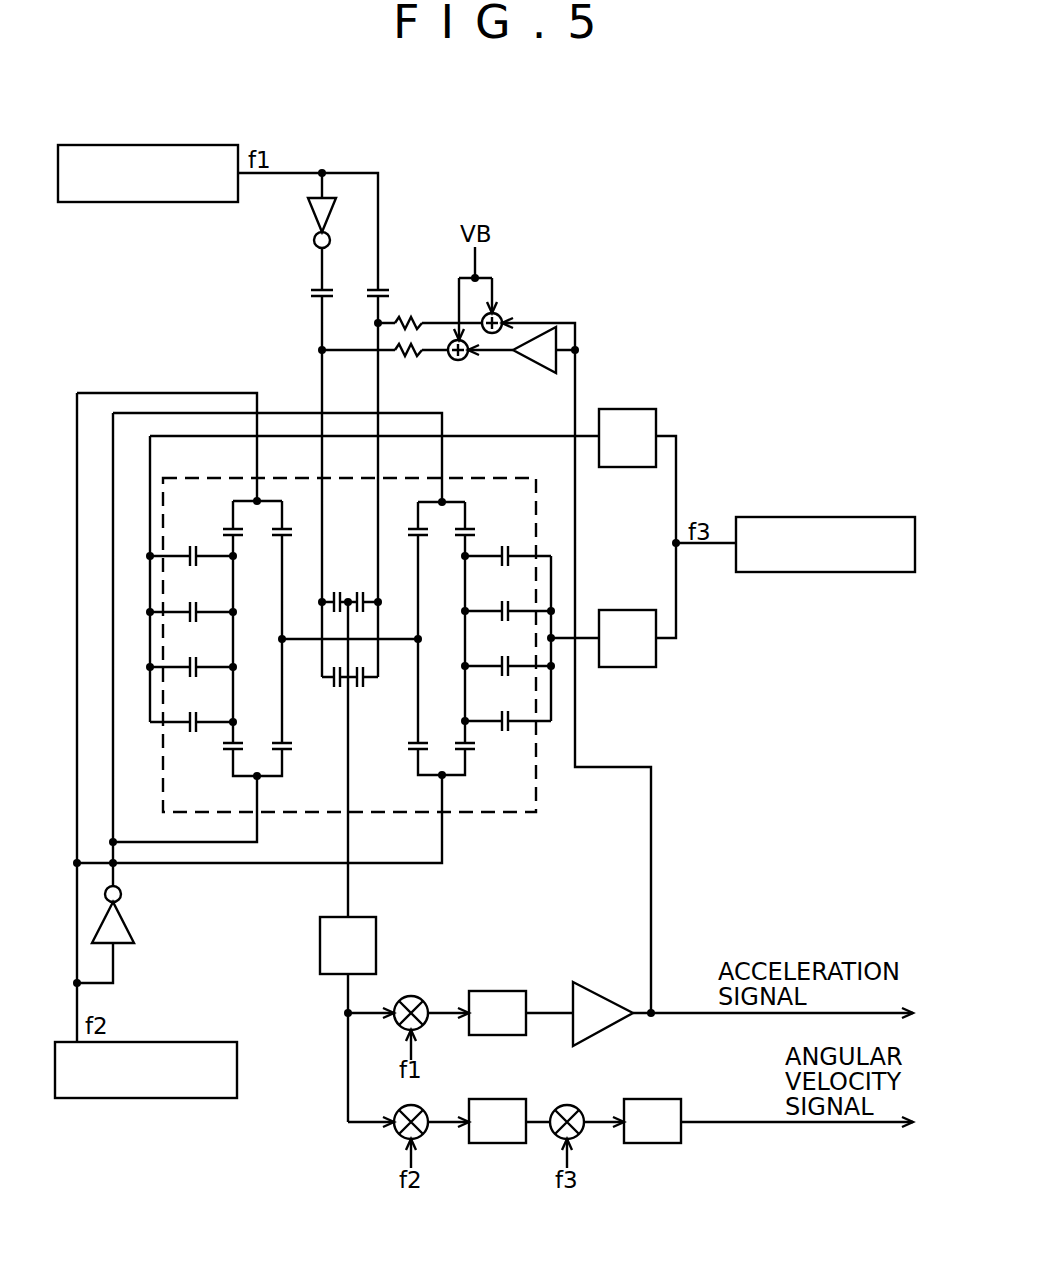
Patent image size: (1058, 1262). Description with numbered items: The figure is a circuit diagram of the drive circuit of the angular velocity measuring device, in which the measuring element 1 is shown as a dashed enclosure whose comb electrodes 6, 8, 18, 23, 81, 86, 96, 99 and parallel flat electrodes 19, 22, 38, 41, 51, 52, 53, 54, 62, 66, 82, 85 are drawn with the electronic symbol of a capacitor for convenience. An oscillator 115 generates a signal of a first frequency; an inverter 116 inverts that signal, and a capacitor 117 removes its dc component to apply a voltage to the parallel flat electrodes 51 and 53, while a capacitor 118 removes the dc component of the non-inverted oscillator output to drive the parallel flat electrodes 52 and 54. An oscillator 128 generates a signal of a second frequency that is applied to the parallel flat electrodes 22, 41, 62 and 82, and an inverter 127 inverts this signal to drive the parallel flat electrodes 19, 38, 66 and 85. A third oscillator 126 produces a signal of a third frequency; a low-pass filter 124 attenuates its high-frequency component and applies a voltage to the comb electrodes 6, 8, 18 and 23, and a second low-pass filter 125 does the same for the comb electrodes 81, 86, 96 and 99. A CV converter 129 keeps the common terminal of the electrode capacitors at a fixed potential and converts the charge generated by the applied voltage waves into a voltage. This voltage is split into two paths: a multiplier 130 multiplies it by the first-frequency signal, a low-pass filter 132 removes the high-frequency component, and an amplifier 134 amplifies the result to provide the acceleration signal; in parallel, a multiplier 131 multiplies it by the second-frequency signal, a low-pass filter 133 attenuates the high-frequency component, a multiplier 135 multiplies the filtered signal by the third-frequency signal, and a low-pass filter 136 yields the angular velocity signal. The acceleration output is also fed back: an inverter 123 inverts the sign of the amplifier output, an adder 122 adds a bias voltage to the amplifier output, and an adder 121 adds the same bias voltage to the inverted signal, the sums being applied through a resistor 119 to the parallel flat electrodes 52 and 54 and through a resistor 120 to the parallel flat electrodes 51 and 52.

The measuring element 1 is at (235, 475).
The comb electrode 6 is at (190, 664).
The comb electrode 8 is at (190, 553).
The comb electrode 18 is at (190, 719).
The parallel flat electrode 19 is at (230, 752).
The parallel flat electrode 22 is at (225, 527).
The comb electrode 23 is at (190, 609).
The parallel flat electrode 38 is at (286, 752).
The parallel flat electrode 41 is at (288, 527).
The parallel flat electrode 51 is at (337, 688).
The parallel flat electrode 52 is at (360, 688).
The parallel flat electrode 53 is at (337, 592).
The parallel flat electrode 54 is at (359, 592).
The parallel flat electrode 62 is at (412, 752).
The parallel flat electrode 66 is at (412, 527).
The comb electrode 81 is at (508, 663).
The parallel flat electrode 82 is at (472, 752).
The parallel flat electrode 85 is at (470, 527).
The comb electrode 86 is at (508, 552).
The comb electrode 96 is at (508, 718).
The comb electrode 99 is at (508, 608).
The oscillator 115 is at (152, 145).
The inverter 116 is at (318, 214).
The capacitor 117 is at (312, 290).
The capacitor 118 is at (388, 290).
The resistor 119 is at (400, 318).
The resistor 120 is at (405, 358).
The adder 121 is at (462, 362).
The adder 122 is at (503, 318).
The inverter 123 is at (535, 375).
The low-pass filter 124 is at (628, 409).
The low-pass filter 125 is at (628, 610).
The oscillator 126 is at (828, 517).
The inverter 127 is at (118, 925).
The oscillator 128 is at (178, 1042).
The CV converter 129 is at (320, 947).
The multiplier 130 is at (414, 996).
The multiplier 131 is at (425, 1108).
The low-pass filter 132 is at (500, 991).
The low-pass filter 133 is at (500, 1143).
The amplifier 134 is at (600, 990).
The multiplier 135 is at (576, 1107).
The low-pass filter 136 is at (654, 1143).